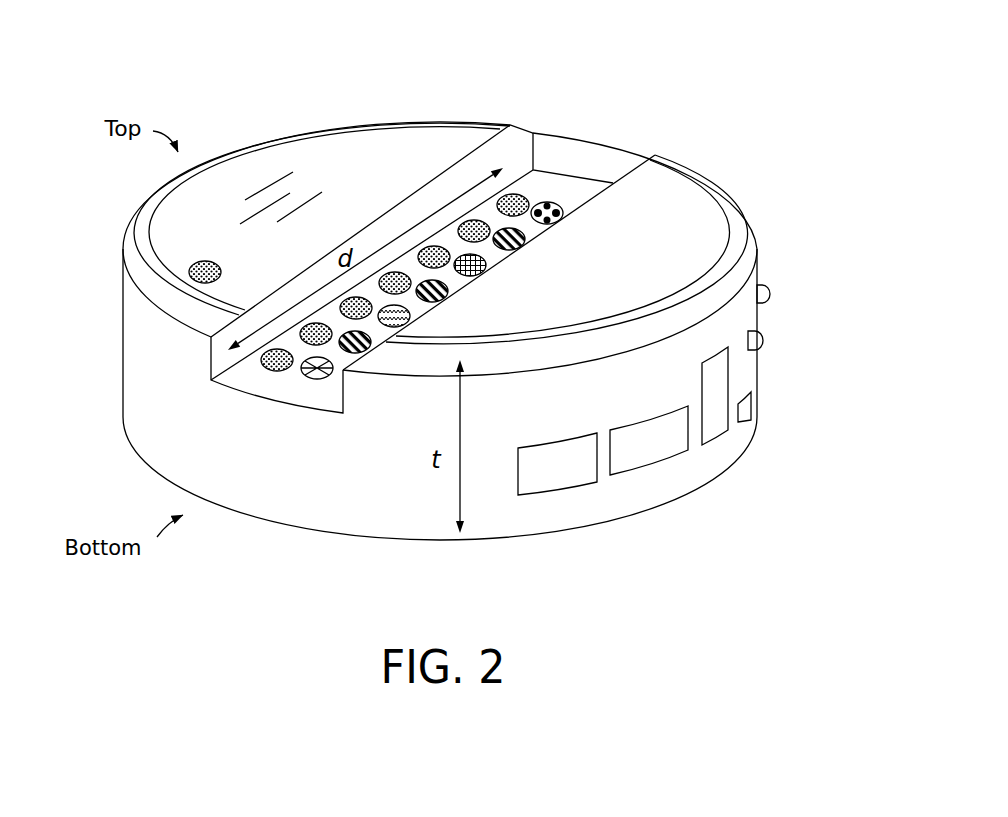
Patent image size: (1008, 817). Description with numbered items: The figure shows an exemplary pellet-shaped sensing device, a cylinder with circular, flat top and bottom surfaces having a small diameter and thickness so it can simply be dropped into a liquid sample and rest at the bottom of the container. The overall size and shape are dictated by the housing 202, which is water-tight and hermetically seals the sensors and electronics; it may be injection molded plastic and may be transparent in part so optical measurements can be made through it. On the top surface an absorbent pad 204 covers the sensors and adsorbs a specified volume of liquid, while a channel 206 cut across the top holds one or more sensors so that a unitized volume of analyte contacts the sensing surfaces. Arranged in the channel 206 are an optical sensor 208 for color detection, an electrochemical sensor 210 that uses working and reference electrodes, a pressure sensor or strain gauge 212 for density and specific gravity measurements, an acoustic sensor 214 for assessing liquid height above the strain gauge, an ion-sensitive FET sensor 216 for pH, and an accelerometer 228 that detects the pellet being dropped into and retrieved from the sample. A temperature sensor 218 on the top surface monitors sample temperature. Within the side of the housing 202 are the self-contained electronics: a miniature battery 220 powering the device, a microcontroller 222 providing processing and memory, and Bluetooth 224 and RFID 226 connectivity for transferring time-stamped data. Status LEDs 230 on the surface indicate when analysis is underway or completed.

The housing 202 is at (302, 498).
The absorbent pad 204 is at (291, 158).
The channel 206 is at (561, 157).
The optical sensor 208 is at (528, 238).
The electrochemical sensor 210 is at (256, 367).
The pressure sensor or strain gauge 212 is at (566, 199).
The acoustic sensor 214 is at (489, 268).
The ion-sensitive field effect transistor sensor 216 is at (302, 380).
The temperature sensor 218 is at (188, 273).
The miniature battery 220 is at (563, 474).
The microcontroller 222 is at (674, 451).
The Bluetooth connectivity 224 is at (720, 426).
The RFID connectivity 226 is at (757, 402).
The accelerometer 228 is at (413, 311).
The status light emitting diodes 230 is at (768, 340).